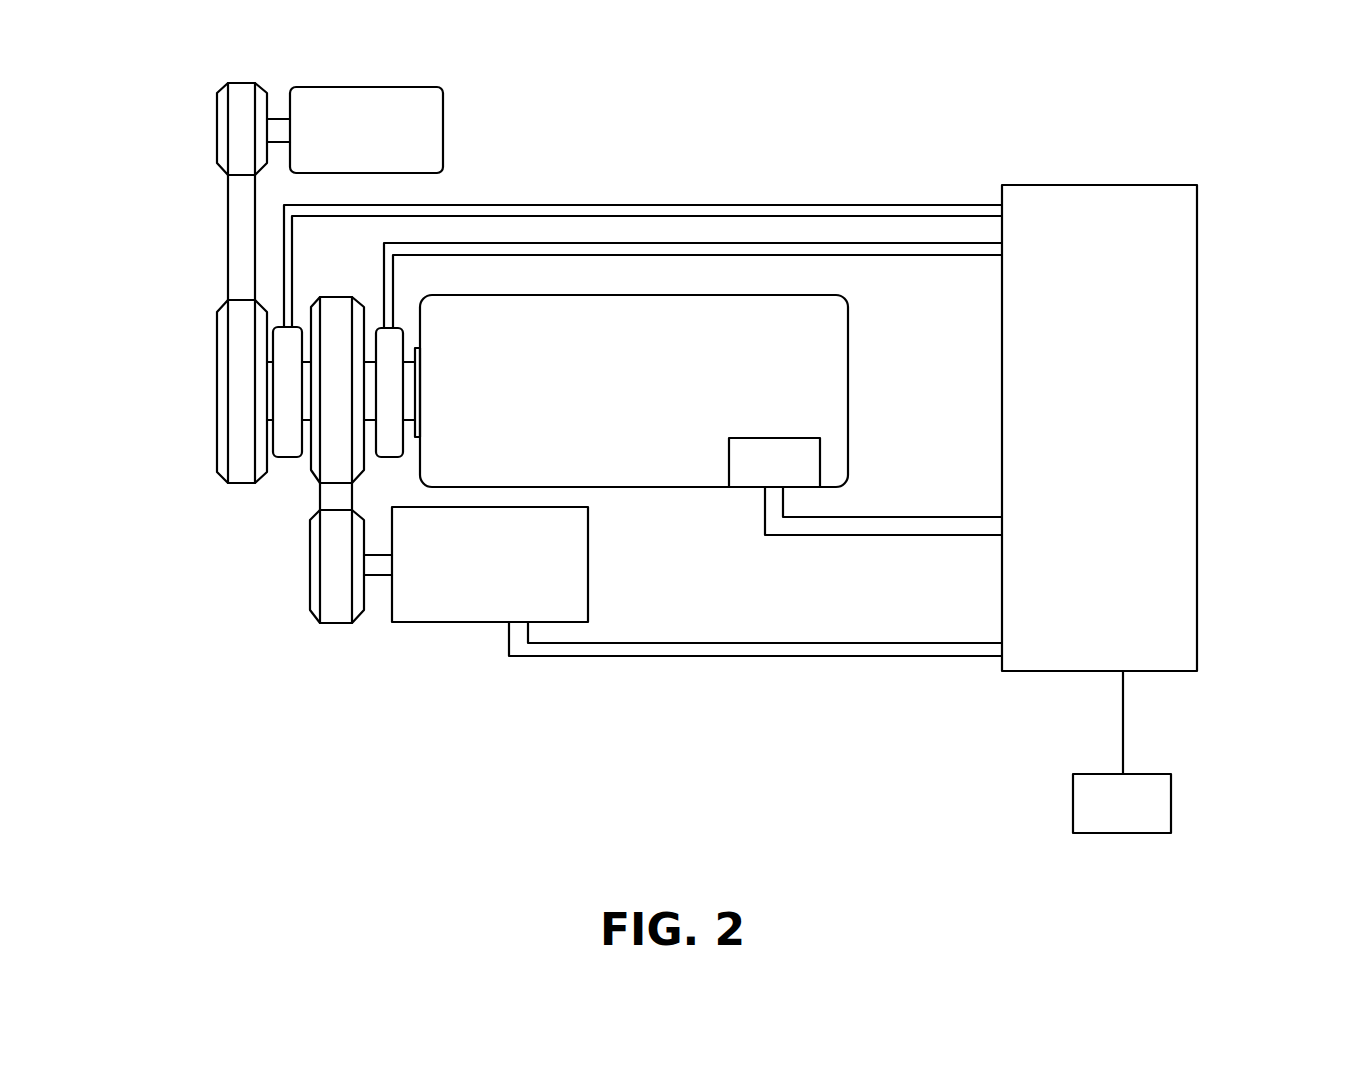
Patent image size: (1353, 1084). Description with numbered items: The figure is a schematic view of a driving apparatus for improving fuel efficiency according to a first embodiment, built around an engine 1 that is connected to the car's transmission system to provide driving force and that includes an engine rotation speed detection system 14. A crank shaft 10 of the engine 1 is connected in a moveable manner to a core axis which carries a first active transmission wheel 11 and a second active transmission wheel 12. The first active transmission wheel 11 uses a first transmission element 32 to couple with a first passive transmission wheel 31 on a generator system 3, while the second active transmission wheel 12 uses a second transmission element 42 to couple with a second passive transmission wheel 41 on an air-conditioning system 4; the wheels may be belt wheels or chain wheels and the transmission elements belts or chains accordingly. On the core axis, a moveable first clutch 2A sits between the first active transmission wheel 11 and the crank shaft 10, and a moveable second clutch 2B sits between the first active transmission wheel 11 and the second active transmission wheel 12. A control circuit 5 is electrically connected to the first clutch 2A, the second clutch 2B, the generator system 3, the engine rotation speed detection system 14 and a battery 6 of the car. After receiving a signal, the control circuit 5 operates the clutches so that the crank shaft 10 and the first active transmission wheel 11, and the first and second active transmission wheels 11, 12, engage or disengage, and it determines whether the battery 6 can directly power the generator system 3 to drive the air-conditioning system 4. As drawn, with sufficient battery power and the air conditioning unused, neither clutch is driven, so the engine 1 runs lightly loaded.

The engine 1 is at (688, 325).
The first clutch 2A is at (392, 348).
The second clutch 2B is at (287, 340).
The generator system 3 is at (450, 603).
The air-conditioning system 4 is at (427, 137).
The control circuit 5 is at (1050, 213).
The battery 6 is at (1157, 800).
The crank shaft 10 is at (415, 427).
The first active transmission wheel 11 is at (317, 463).
The second active transmission wheel 12 is at (222, 386).
The engine rotation speed detection system 14 is at (780, 455).
The first passive transmission wheel 31 is at (313, 595).
The first transmission element 32 is at (338, 533).
The second passive transmission wheel 41 is at (223, 146).
The second transmission element 42 is at (237, 233).